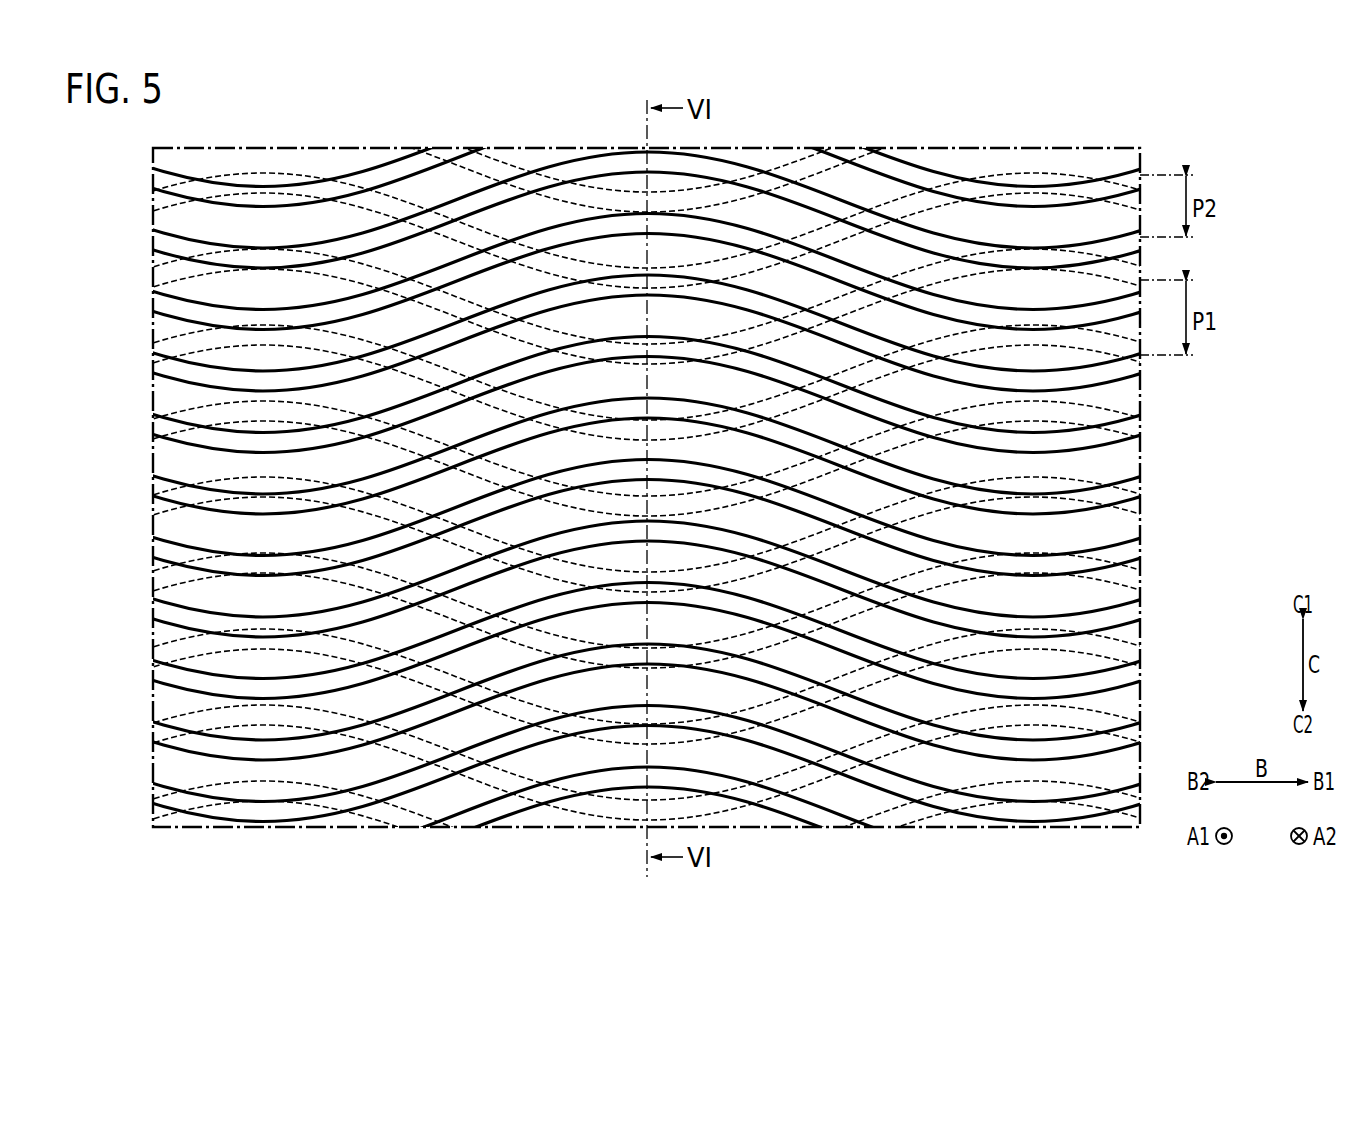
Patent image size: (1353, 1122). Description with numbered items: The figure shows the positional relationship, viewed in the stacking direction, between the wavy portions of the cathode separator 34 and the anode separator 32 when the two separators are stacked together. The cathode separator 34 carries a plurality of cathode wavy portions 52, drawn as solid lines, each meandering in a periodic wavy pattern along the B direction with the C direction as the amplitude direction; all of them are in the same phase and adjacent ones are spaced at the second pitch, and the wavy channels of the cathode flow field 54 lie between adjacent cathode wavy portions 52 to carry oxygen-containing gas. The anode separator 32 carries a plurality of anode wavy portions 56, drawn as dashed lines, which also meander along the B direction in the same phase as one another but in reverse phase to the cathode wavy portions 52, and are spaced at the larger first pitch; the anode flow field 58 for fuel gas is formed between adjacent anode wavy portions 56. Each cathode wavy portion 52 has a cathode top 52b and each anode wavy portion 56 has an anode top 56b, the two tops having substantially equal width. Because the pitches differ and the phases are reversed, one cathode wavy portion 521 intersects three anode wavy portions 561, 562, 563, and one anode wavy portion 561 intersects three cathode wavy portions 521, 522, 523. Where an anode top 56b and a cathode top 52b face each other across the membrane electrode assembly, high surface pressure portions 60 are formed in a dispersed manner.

The anode separator 32 is at (646, 487).
The cathode separator 34 is at (1262, 107).
The cathode wavy portion 52 is at (372, 178).
The cathode top 52b is at (357, 240).
The cathode flow field 54 is at (245, 226).
The anode wavy portion 56 is at (1017, 178).
The anode top 56b is at (927, 275).
The anode flow field 58 is at (1053, 226).
The high surface pressure portion 60 is at (750, 176).
The cathode wavy portion 521 is at (199, 435).
The cathode wavy portion 522 is at (223, 504).
The cathode wavy portion 523 is at (165, 547).
The anode wavy portion 561 is at (194, 405).
The anode wavy portion 562 is at (168, 335).
The anode wavy portion 563 is at (168, 262).